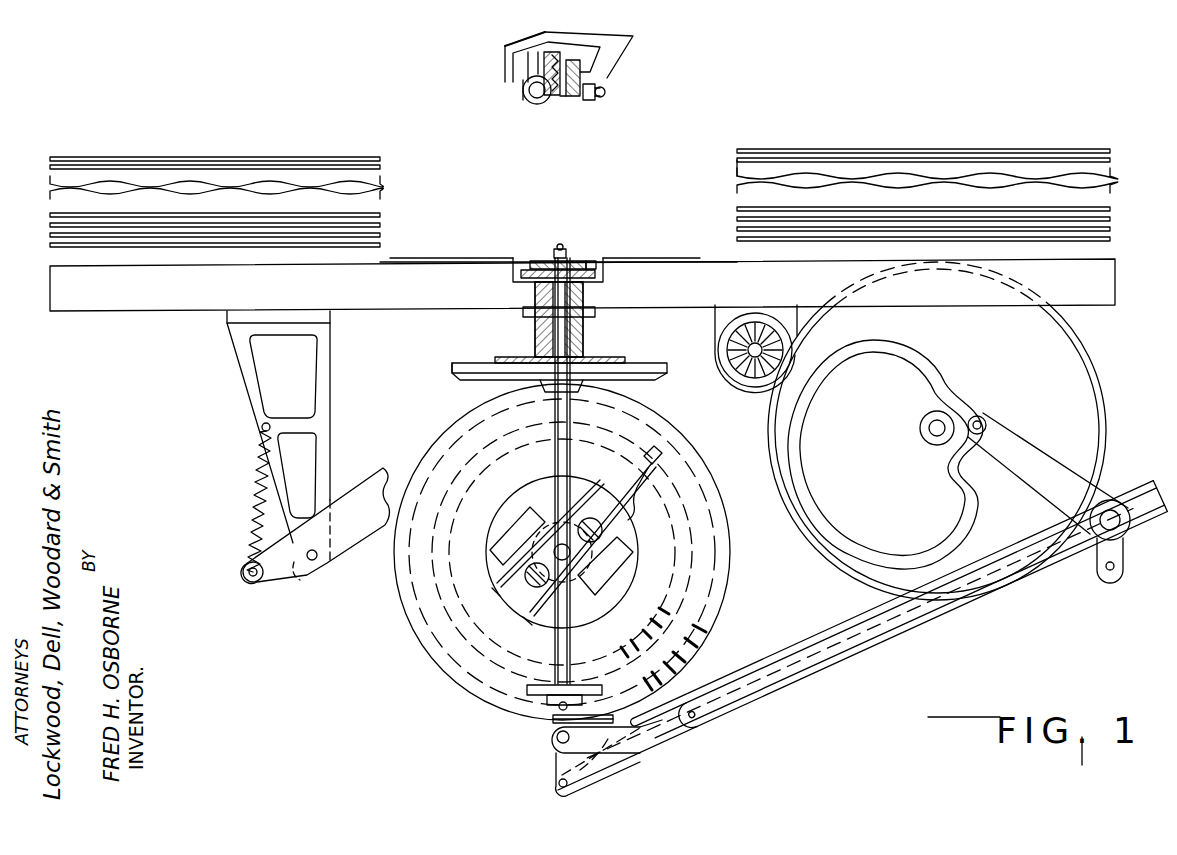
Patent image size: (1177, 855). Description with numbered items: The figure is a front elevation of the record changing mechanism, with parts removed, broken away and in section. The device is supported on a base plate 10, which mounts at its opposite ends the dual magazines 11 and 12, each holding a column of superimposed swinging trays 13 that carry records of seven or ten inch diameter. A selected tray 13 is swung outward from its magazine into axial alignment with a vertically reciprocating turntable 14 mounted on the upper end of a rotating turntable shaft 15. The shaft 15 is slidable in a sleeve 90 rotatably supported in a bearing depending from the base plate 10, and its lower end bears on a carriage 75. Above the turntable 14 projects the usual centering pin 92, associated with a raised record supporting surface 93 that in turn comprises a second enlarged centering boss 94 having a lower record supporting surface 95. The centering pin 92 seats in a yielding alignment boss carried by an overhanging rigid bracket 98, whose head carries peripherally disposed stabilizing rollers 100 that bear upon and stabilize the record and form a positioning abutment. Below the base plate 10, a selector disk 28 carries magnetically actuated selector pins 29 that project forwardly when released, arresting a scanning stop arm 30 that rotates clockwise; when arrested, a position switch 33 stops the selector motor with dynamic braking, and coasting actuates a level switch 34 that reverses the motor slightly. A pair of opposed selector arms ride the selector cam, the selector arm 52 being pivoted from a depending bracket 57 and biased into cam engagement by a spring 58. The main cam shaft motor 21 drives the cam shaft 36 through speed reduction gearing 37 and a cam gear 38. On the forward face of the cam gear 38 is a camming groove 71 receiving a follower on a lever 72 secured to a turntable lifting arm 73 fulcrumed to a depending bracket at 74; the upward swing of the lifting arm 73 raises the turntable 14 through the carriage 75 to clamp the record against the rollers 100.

The base plate 10 is at (713, 290).
The magazine 11 is at (1112, 166).
The magazine 12 is at (50, 158).
The swinging tray 13 is at (735, 165).
The turntable 14 is at (598, 262).
The turntable shaft 15 is at (560, 646).
The main cam shaft motor 21 is at (717, 350).
The selector disk 28 is at (432, 604).
The selector pin 29 is at (672, 612).
The scanning stop arm 30 is at (655, 460).
The position switch 33 is at (601, 553).
The level switch 34 is at (518, 541).
The cam shaft 36 is at (928, 440).
The speed reduction gearing 37 is at (790, 340).
The cam gear 38 is at (1070, 372).
The selector arm 52 is at (356, 505).
The depending bracket 57 is at (246, 384).
The spring 58 is at (258, 497).
The camming groove 71 is at (963, 520).
The lever 72 is at (1040, 466).
The turntable lifting arm 73 is at (890, 620).
The fulcrum bracket 74 is at (1112, 518).
The carriage 75 is at (558, 723).
The sleeve 90 is at (584, 328).
The centering pin 92 is at (562, 246).
The raised record supporting surface 93 is at (541, 258).
The enlarged centering boss 94 is at (592, 258).
The lower record supporting surface 95 is at (526, 268).
The overhanging rigid bracket 98 is at (633, 40).
The stabilizing roller 100 is at (597, 98).